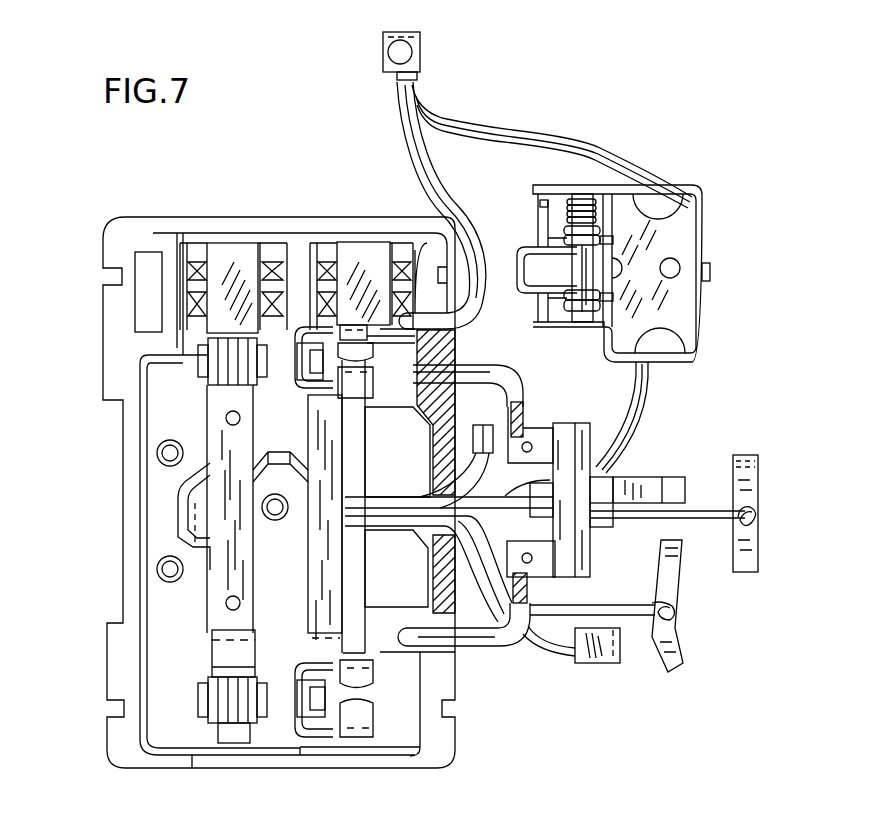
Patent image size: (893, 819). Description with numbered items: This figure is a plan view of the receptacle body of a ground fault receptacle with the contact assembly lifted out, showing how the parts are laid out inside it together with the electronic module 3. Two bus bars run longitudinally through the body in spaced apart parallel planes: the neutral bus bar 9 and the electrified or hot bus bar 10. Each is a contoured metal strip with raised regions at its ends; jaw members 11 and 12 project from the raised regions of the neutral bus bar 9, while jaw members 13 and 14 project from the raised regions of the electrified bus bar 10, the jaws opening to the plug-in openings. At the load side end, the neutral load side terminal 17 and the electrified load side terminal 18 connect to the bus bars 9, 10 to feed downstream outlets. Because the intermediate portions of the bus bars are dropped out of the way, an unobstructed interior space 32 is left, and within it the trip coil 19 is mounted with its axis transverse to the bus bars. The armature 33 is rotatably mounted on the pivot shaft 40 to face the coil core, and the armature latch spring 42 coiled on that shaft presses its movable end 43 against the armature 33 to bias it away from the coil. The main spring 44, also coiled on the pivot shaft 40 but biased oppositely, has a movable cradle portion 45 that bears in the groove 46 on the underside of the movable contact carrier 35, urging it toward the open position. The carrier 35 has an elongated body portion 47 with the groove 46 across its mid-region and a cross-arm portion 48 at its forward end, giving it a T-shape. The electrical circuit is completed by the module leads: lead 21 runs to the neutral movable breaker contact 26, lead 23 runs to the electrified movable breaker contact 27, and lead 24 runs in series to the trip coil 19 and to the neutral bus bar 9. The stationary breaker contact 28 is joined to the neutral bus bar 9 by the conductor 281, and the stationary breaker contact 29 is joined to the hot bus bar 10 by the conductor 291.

The electronic module 3 is at (397, 507).
The neutral bus bar 9 is at (333, 457).
The electrified bus bar 10 is at (205, 478).
The jaw member 11 is at (375, 698).
The jaw member 12 is at (372, 355).
The jaw member 13 is at (237, 697).
The jaw member 14 is at (228, 357).
The load side terminal 17 is at (326, 286).
The load side terminal 18 is at (196, 285).
The trip coil 19 is at (670, 213).
The lead 21 is at (510, 378).
The lead 23 is at (495, 650).
The lead 24 is at (513, 123).
The neutral movable breaker contact 26 is at (531, 440).
The electrified movable breaker contact 27 is at (533, 563).
The stationary breaker contact 28 is at (403, 50).
The stationary breaker contact 29 is at (607, 652).
The interior space 32 is at (196, 518).
The armature 33 is at (540, 238).
The movable contact carrier 35 is at (580, 490).
The pivot shaft 40 is at (583, 264).
The armature latch spring 42 is at (578, 203).
The movable end 43 is at (538, 198).
The main spring 44 is at (598, 302).
The movable cradle portion 45 is at (517, 274).
The groove 46 is at (603, 492).
The elongated body portion 47 is at (650, 472).
The cross-arm portion 48 is at (567, 427).
The conductor 281 is at (403, 118).
The conductor 291 is at (553, 647).